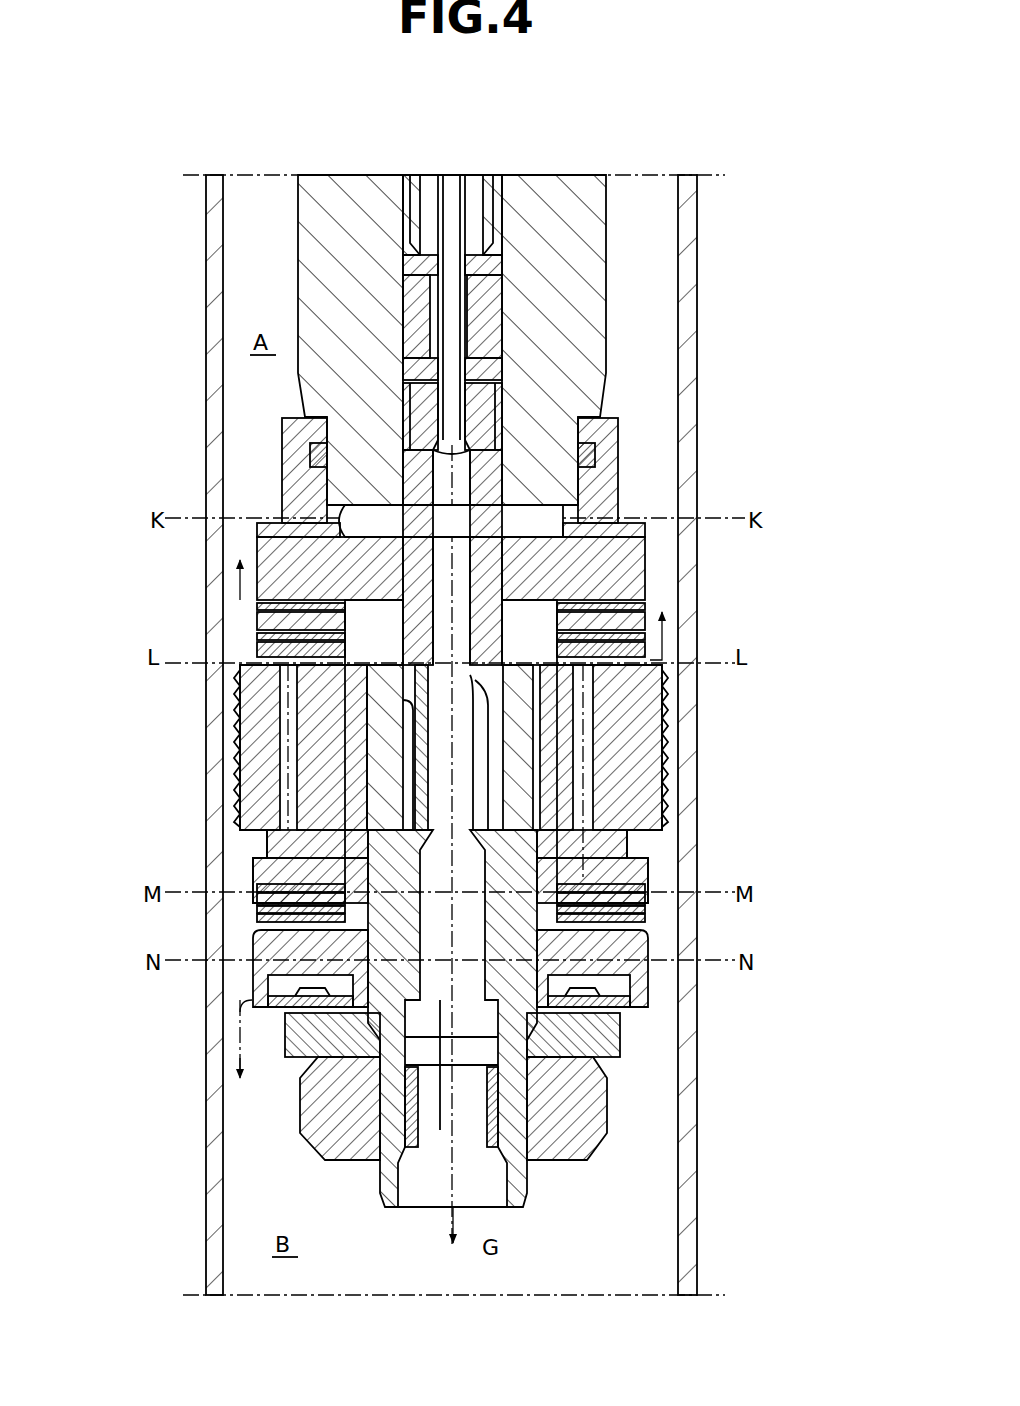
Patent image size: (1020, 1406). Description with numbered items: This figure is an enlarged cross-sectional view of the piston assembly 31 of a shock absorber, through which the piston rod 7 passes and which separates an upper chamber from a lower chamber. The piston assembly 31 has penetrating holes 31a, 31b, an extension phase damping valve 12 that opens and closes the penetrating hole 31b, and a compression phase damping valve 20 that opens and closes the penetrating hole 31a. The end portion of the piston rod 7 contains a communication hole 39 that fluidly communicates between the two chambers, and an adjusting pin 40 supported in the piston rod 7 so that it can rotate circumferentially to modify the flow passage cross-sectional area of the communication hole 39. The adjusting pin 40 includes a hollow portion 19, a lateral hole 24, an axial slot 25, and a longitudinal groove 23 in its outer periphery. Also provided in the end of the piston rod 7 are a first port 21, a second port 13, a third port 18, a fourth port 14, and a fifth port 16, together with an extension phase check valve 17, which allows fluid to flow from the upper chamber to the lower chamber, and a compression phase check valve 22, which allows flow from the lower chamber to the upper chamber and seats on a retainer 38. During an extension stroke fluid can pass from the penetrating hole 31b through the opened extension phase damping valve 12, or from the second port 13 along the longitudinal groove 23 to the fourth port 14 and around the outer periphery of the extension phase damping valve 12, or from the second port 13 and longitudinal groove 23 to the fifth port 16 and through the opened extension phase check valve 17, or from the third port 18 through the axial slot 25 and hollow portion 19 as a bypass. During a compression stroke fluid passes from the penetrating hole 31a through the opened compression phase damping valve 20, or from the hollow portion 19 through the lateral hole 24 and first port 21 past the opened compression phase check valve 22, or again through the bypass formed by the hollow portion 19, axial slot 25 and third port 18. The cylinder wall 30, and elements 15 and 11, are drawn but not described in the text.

The piston rod 7 is at (296, 232).
The pipe 30 is at (700, 238).
The adjusting pin 40 is at (500, 433).
The first port 21 is at (582, 467).
The lateral hole 24 is at (345, 512).
The hollow portion 19 is at (600, 585).
The retainer 38 is at (622, 605).
The compression phase check valve 22 is at (268, 605).
The compression phase damping valve 20 is at (300, 620).
The second port 13 is at (360, 702).
The third port 18 is at (520, 714).
The penetrating hole 31a is at (250, 752).
The piston assembly 31 is at (452, 784).
The longitudinal groove 23 is at (300, 792).
The penetrating hole 31b is at (650, 792).
The axial slot 25 is at (600, 838).
The fourth port 14 is at (362, 847).
The packing 15 is at (322, 870).
The valve stem 11 is at (650, 884).
The extension phase damping valve 12 is at (602, 907).
The extension phase check valve 17 is at (622, 1008).
The fifth port 16 is at (395, 978).
The communication hole 39 is at (504, 1207).